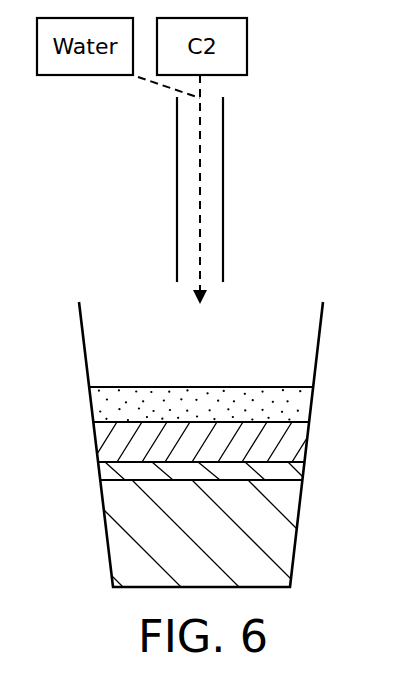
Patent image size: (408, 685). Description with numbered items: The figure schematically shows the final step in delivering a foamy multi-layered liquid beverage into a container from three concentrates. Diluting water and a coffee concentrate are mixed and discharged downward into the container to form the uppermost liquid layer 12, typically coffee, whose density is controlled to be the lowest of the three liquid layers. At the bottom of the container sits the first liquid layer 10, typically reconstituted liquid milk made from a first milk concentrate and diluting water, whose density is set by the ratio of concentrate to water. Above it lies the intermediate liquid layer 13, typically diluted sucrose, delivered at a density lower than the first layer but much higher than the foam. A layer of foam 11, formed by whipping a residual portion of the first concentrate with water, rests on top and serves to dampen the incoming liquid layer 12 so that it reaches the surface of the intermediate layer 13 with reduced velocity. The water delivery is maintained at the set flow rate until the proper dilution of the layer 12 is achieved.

The first liquid layer 10 is at (285, 531).
The foam layer 11 is at (286, 388).
The liquid layer 12 is at (295, 443).
The liquid layer 13 is at (100, 467).